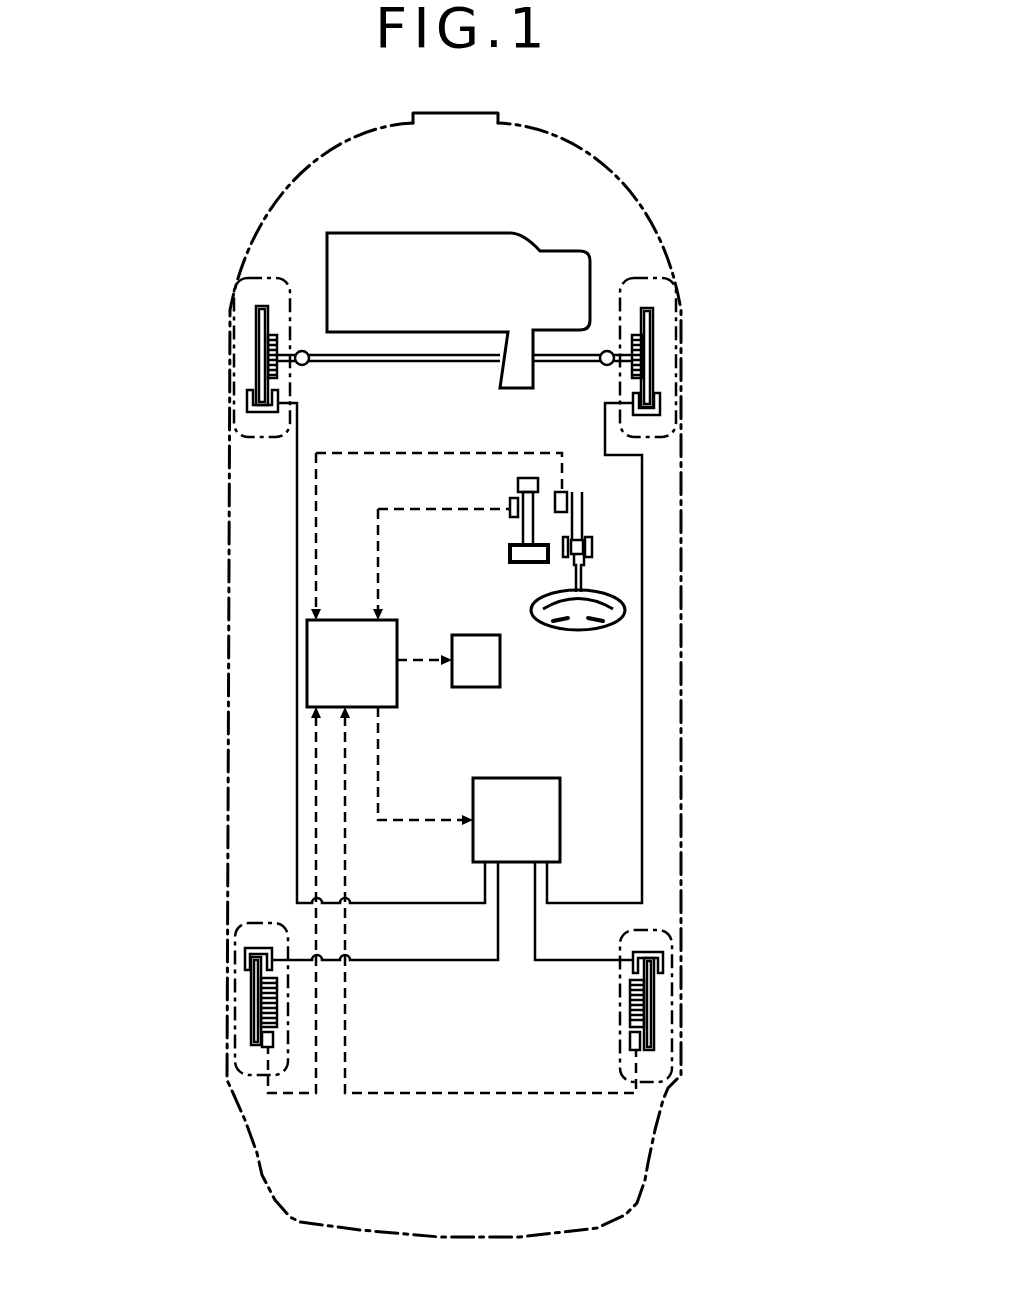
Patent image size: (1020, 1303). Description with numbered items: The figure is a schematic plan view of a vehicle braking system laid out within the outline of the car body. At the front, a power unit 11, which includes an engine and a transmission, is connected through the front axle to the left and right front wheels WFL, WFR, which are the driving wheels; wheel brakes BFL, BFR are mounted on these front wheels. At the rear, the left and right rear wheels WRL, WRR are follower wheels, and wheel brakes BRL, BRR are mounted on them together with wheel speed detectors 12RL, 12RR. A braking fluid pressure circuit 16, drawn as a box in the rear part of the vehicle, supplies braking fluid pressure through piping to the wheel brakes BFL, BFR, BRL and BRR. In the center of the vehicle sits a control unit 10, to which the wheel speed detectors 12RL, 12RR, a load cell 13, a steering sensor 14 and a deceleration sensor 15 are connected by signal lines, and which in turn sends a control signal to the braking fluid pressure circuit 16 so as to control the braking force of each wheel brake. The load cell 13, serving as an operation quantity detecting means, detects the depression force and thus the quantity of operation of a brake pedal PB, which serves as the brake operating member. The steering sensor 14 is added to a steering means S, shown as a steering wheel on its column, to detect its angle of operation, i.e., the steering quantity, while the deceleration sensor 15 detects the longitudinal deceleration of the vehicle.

The control unit 10 is at (360, 675).
The power unit 11 is at (452, 300).
The wheel speed detector 12RL is at (257, 1045).
The wheel speed detector 12RR is at (630, 1042).
The load cell 13 is at (512, 508).
The steering sensor 14 is at (563, 472).
The deceleration sensor 15 is at (481, 678).
The braking fluid pressure circuit 16 is at (522, 827).
The brake pedal PB is at (510, 557).
The steering means S is at (583, 629).
The left front wheel WFL is at (234, 302).
The right front wheel WFR is at (677, 328).
The left rear wheel WRL is at (233, 988).
The right rear wheel WRR is at (673, 1045).
The wheel brake BFL is at (247, 400).
The wheel brake BFR is at (660, 403).
The wheel brake BRL is at (247, 952).
The wheel brake BRR is at (663, 957).